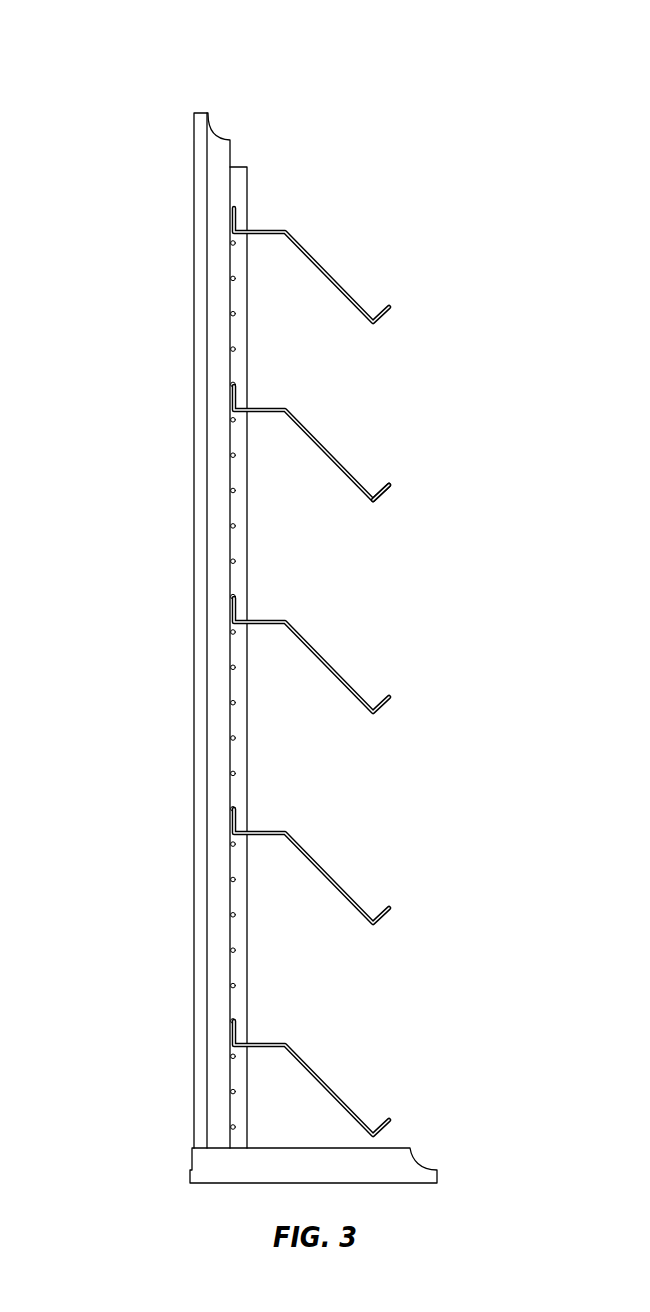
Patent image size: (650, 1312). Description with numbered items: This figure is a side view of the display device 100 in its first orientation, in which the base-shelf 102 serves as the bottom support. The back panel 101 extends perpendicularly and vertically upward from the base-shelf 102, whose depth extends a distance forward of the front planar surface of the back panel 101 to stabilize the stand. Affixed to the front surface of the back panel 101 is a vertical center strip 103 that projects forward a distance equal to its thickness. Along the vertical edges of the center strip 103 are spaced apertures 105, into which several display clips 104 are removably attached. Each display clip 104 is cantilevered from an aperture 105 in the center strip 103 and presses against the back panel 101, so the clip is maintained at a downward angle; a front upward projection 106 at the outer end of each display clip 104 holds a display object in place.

The display device 100 is at (156, 78).
The back panel 101 is at (232, 152).
The base-shelf 102 is at (395, 1148).
The center strip 103 is at (247, 577).
The display clip 104 is at (303, 423).
The apertures 105 is at (231, 527).
The front upward projection 106 is at (390, 483).